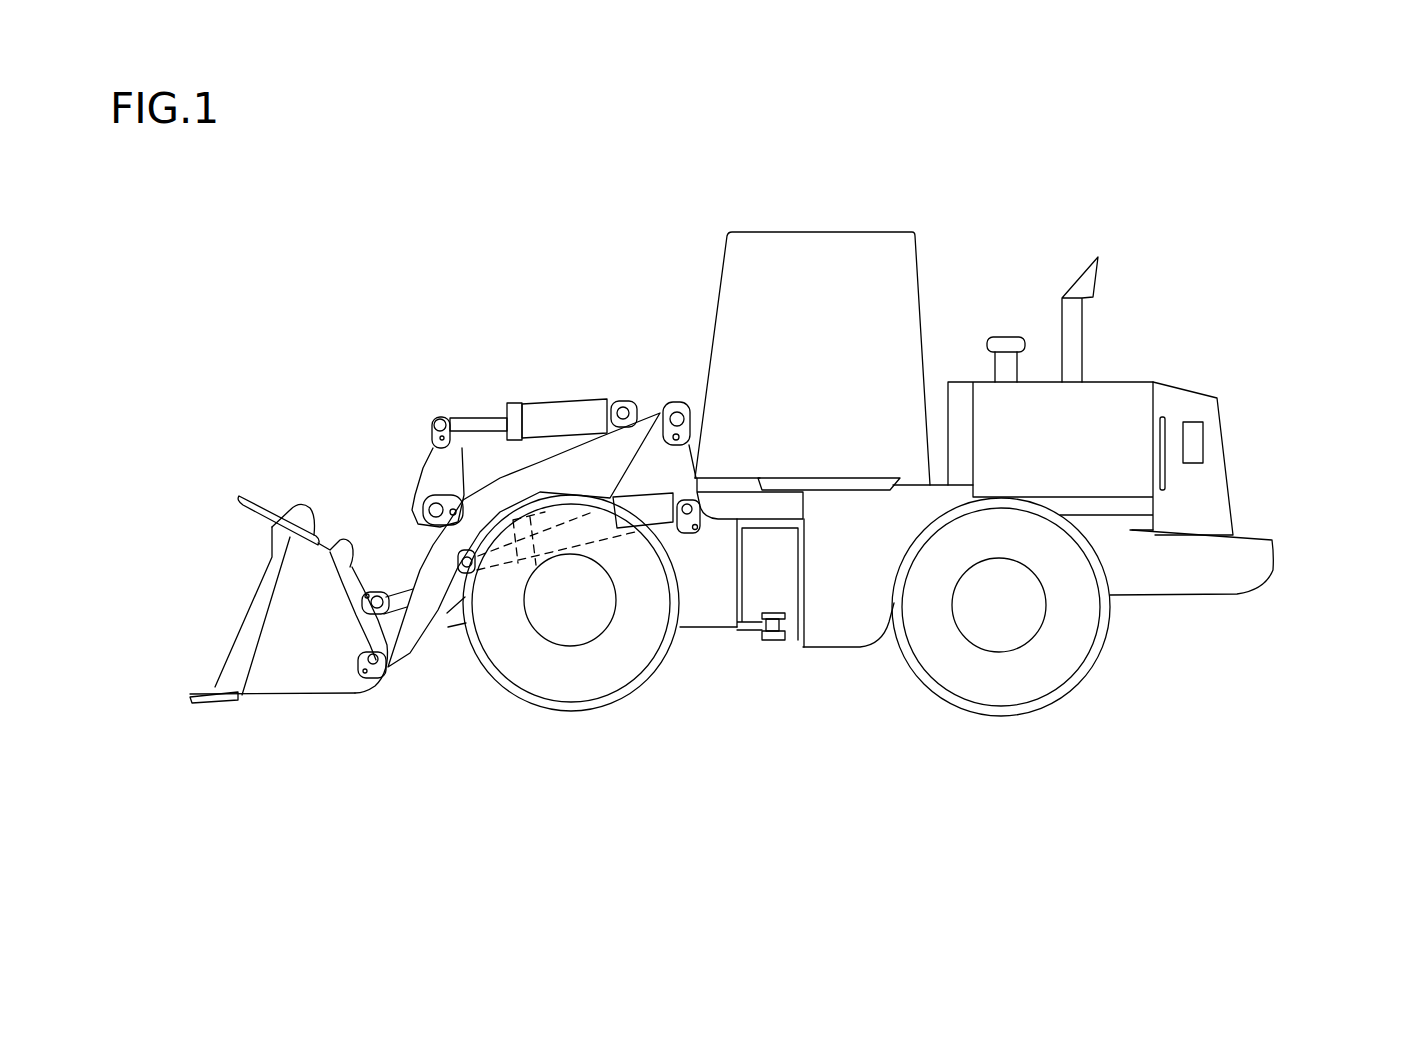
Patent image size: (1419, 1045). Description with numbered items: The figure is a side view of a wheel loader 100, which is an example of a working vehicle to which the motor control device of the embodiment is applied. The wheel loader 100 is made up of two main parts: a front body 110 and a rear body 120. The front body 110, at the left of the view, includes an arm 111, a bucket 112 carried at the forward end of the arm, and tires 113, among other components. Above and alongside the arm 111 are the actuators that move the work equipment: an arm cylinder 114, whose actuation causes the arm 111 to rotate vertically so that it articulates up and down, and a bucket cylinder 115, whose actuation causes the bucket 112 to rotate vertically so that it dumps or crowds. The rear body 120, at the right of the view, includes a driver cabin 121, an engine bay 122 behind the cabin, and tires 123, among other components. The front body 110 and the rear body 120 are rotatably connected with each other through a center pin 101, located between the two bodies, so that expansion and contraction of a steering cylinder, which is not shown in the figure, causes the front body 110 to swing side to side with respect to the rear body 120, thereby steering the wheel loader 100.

The wheel loader 100 is at (1181, 633).
The center pin 101 is at (777, 637).
The front body 110 is at (670, 404).
The arm 111 is at (415, 577).
The bucket 112 is at (279, 518).
The tires 113 is at (560, 680).
The arm cylinder 114 is at (522, 566).
The bucket cylinder 115 is at (553, 395).
The rear body 120 is at (1247, 558).
The driver cabin 121 is at (770, 248).
The engine bay 122 is at (1135, 400).
The tires 123 is at (1020, 685).